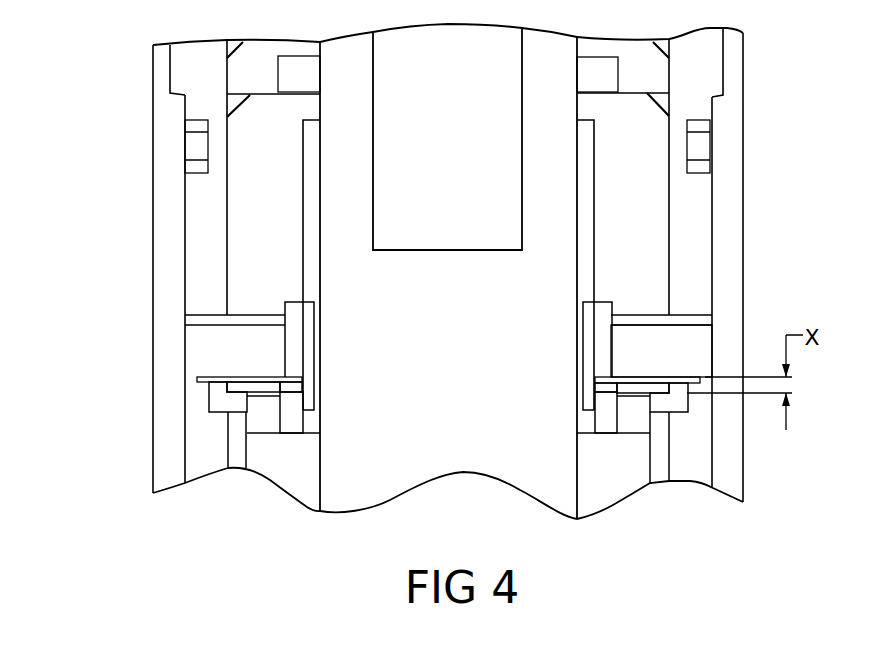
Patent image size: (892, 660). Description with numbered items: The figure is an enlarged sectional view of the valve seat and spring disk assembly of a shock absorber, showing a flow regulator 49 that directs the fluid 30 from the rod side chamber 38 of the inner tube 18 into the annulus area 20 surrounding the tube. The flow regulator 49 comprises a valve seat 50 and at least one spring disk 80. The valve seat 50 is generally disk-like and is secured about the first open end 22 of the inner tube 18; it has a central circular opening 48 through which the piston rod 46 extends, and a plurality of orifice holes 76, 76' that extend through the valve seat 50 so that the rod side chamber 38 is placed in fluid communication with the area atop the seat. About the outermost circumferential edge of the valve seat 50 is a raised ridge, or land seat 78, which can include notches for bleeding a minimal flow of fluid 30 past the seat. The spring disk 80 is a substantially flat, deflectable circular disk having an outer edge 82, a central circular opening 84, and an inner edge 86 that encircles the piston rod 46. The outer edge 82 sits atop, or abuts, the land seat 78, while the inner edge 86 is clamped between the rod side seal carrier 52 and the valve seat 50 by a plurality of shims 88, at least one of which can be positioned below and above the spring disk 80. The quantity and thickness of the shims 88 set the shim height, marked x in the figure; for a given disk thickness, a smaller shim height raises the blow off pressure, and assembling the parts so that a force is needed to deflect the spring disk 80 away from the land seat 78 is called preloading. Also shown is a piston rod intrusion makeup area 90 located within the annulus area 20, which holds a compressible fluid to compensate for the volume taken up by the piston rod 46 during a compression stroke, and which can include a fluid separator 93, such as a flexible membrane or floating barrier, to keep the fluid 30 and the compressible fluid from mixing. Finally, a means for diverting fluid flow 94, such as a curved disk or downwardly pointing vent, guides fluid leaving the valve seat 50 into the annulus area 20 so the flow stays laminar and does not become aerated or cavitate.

The inner tube 18 is at (237, 465).
The annulus area 20 is at (700, 352).
The first open end 22 is at (310, 422).
The fluid 30 is at (620, 480).
The rod side chamber 38 is at (600, 493).
The piston rod 46 is at (388, 298).
The central circular opening 48 is at (247, 434).
The flow regulator 49 is at (93, 360).
The valve seat 50 is at (612, 423).
The rod side seal carrier 52 is at (255, 192).
The orifice hole 76 is at (205, 412).
The orifice hole 76' is at (688, 429).
The land seat 78 is at (195, 390).
The spring disk 80 is at (283, 375).
The outer edge 82 is at (206, 385).
The central circular opening 84 is at (302, 377).
The inner edge 86 is at (237, 380).
The shim 88 is at (287, 387).
The piston rod intrusion makeup area 90 is at (672, 348).
The fluid separator 93 is at (648, 323).
The means for diverting fluid flow 94 is at (707, 368).